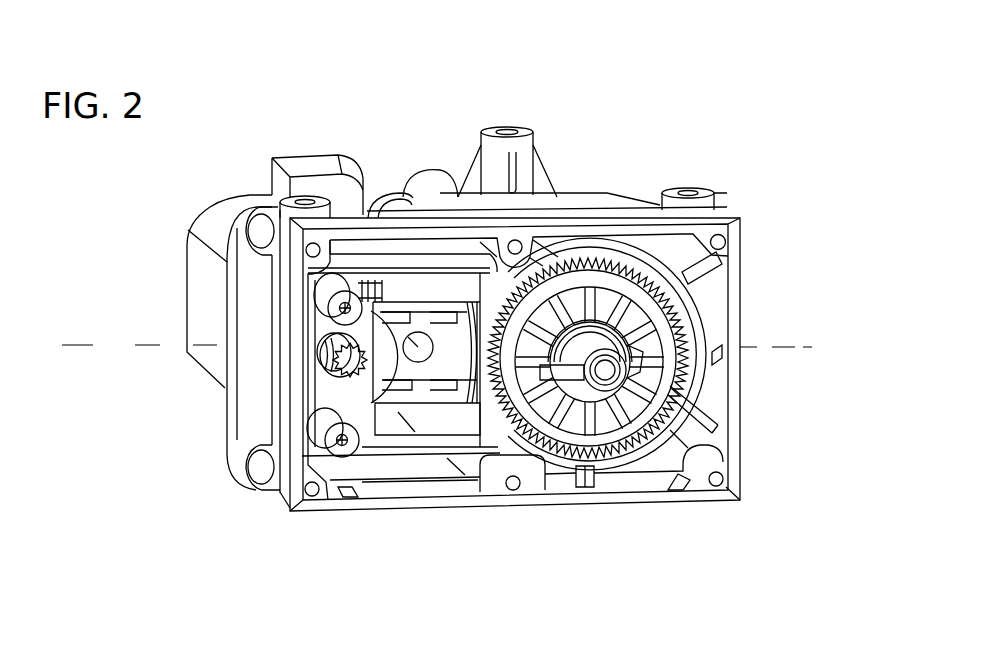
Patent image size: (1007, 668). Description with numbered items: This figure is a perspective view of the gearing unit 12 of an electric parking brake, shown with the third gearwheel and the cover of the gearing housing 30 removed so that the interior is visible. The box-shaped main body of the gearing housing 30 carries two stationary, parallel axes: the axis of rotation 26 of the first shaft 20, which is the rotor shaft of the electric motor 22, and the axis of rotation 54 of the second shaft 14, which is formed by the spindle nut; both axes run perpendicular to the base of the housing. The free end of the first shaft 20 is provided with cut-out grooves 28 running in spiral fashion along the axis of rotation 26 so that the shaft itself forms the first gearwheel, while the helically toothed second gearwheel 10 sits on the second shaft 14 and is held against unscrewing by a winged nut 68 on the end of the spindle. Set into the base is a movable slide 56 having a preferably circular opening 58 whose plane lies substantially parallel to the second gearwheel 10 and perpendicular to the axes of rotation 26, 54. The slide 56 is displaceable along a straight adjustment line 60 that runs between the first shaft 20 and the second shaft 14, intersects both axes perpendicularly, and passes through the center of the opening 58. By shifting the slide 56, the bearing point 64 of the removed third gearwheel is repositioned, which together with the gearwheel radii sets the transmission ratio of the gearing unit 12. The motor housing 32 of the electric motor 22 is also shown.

The second gearwheel 10 is at (585, 258).
The gearing unit 12 is at (745, 101).
The second shaft 14 is at (606, 384).
The first shaft 20 is at (327, 333).
The electric motor 22 is at (212, 222).
The axis of rotation 26 is at (543, 547).
The cut-out grooves 28 is at (330, 352).
The gearing housing 30 is at (733, 210).
The motor housing 32 is at (438, 192).
The axis of rotation 54 is at (787, 543).
The slide 56 is at (438, 336).
The opening 58 is at (407, 348).
The straight adjustment line 60 is at (780, 345).
The bearing point 64 is at (422, 388).
The winged nut 68 is at (634, 345).